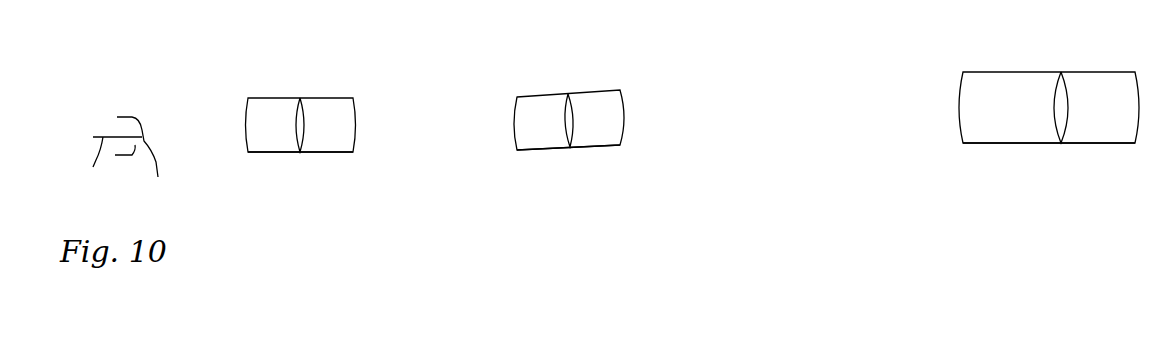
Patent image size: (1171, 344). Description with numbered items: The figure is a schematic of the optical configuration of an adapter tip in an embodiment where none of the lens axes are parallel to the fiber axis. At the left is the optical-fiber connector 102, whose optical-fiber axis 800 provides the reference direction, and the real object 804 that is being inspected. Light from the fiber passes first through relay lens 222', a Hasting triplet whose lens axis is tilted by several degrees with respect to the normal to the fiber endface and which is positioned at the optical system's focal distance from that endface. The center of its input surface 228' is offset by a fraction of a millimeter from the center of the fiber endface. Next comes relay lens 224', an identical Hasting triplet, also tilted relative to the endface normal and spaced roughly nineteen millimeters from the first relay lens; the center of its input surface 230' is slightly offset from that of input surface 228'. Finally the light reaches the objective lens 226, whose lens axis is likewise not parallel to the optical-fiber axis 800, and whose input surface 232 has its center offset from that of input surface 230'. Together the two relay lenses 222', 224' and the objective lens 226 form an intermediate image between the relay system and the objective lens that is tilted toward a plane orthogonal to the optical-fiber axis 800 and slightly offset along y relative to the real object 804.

The optical-fiber connector 102 is at (122, 112).
The optical-fiber axis 800 is at (112, 171).
The real object 804 is at (145, 178).
The input surface of relay lens 222' 228' is at (296, 105).
The relay lens 222' is at (300, 193).
The input surface of relay lens 224' 230' is at (564, 101).
The relay lens 224' is at (568, 183).
The input surface of the objective lens 232 is at (955, 92).
The objective lens 226 is at (1010, 143).